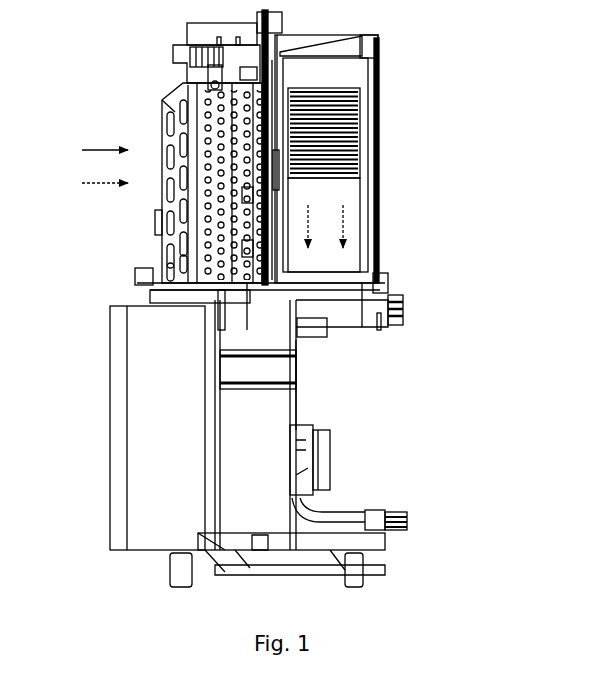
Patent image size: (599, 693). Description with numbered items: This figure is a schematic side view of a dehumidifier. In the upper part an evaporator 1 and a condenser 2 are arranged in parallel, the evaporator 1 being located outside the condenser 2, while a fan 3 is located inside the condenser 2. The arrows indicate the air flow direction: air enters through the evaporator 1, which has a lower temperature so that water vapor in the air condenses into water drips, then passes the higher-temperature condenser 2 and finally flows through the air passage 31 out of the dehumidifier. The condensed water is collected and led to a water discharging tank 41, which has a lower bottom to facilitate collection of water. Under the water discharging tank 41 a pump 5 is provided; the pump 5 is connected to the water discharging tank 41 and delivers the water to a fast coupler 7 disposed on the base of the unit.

The evaporator 1 is at (170, 128).
The condenser 2 is at (168, 100).
The fan 3 is at (358, 100).
The air passage 31 is at (317, 200).
The water discharging tank 41 is at (348, 318).
The pump 5 is at (310, 445).
The fast coupler 7 is at (378, 517).